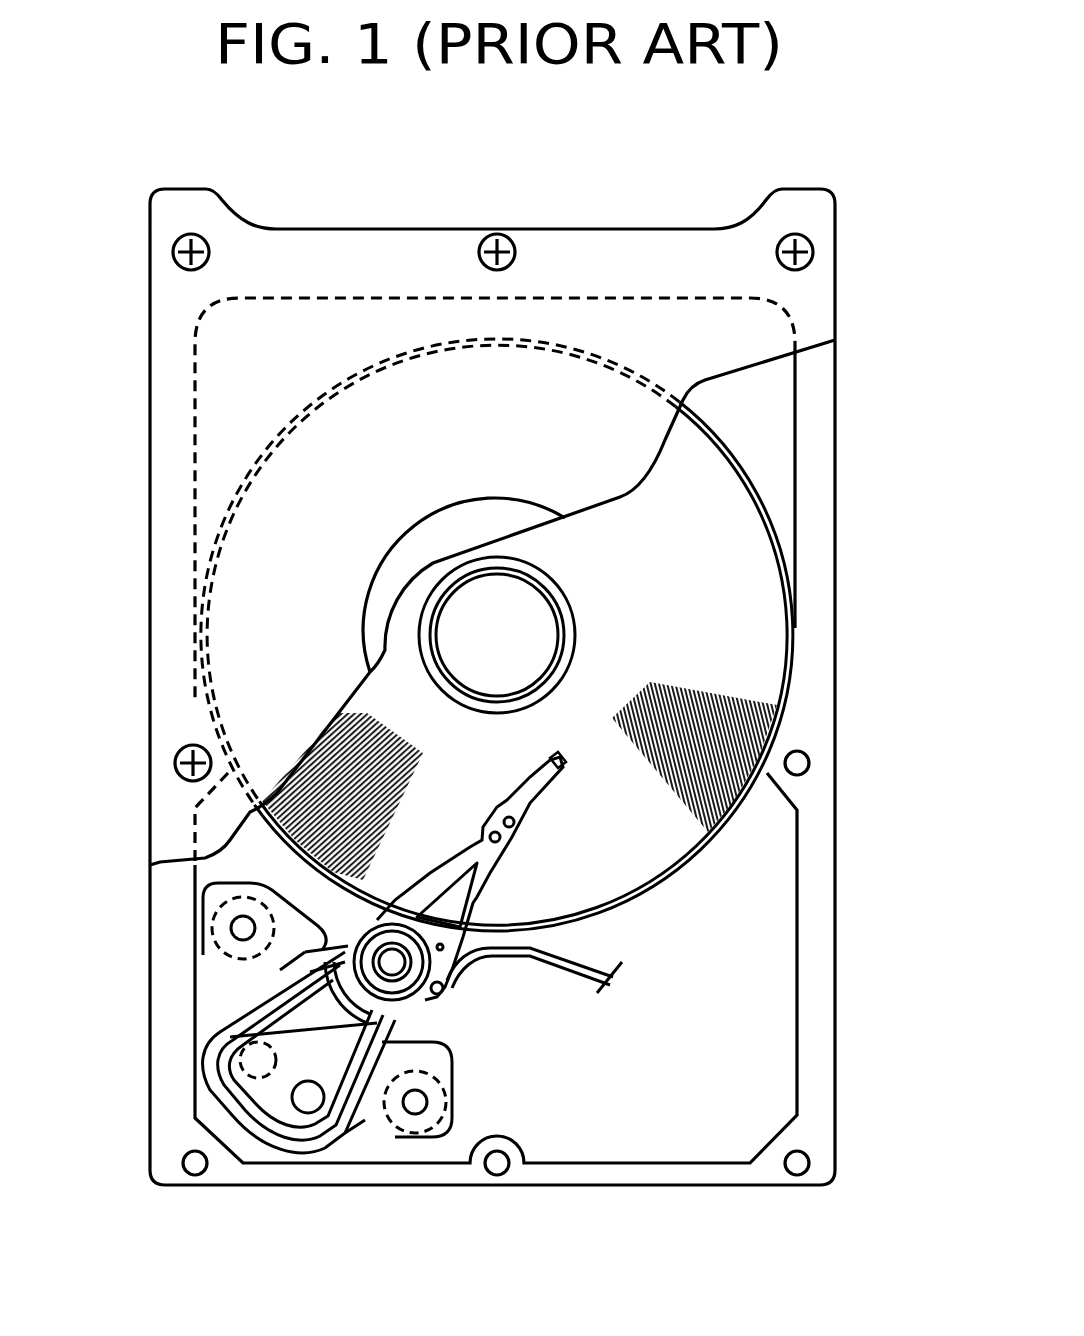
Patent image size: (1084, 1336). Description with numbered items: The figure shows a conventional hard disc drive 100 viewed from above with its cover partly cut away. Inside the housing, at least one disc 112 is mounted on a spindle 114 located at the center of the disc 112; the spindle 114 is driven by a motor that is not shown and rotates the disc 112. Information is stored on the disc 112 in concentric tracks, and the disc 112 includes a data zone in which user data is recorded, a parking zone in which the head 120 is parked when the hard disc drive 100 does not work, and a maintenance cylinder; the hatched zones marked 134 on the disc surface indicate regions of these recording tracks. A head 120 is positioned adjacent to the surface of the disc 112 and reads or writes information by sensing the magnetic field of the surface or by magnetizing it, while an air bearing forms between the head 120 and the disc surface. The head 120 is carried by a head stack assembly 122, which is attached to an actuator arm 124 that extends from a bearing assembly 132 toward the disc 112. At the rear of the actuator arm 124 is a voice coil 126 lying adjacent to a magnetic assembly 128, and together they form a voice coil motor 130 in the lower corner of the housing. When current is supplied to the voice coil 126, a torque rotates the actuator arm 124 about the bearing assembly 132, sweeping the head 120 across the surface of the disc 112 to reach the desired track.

The hard disc drive 100 is at (833, 164).
The disc 112 is at (746, 569).
The spindle 114 is at (473, 612).
The head 120 is at (562, 770).
The head stack assembly 122 is at (525, 805).
The actuator arm 124 is at (290, 960).
The voice coil 126 is at (230, 1050).
The magnetic assembly 128 is at (245, 993).
The voice coil motor 130 is at (360, 1117).
The bearing assembly 132 is at (413, 963).
The data zone 134 is at (353, 753).